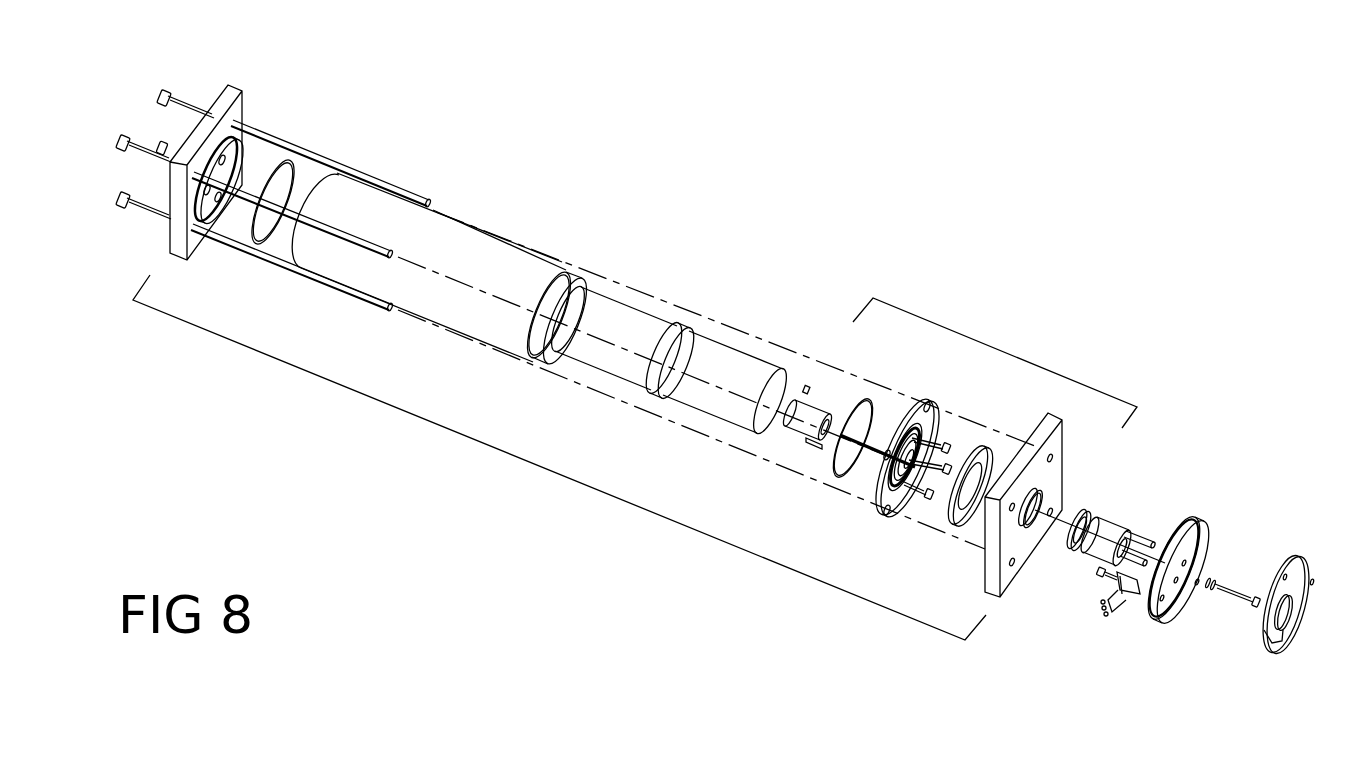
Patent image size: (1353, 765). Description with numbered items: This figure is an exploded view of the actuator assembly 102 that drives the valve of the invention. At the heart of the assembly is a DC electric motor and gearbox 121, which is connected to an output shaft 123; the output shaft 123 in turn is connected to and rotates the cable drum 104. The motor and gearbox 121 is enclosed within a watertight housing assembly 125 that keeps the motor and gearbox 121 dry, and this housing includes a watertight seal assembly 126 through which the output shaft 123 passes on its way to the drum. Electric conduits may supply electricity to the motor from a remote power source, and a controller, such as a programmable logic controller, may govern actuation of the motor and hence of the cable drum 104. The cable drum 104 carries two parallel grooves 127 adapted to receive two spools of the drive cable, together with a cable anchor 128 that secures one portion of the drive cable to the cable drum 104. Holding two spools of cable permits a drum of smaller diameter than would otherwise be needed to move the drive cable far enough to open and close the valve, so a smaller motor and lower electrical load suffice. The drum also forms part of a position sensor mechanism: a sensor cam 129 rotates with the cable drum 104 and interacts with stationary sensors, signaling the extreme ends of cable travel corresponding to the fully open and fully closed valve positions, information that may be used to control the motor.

The actuator assembly 102 is at (741, 84).
The cable drum 104 is at (1202, 527).
The DC electric motor and gearbox 121 is at (668, 320).
The output shaft 123 is at (840, 404).
The watertight housing assembly 125 is at (548, 472).
The watertight seal assembly 126 is at (1005, 352).
The parallel grooves 127 is at (1163, 527).
The cable anchor 128 is at (1130, 600).
The sensor cam 129 is at (1297, 557).